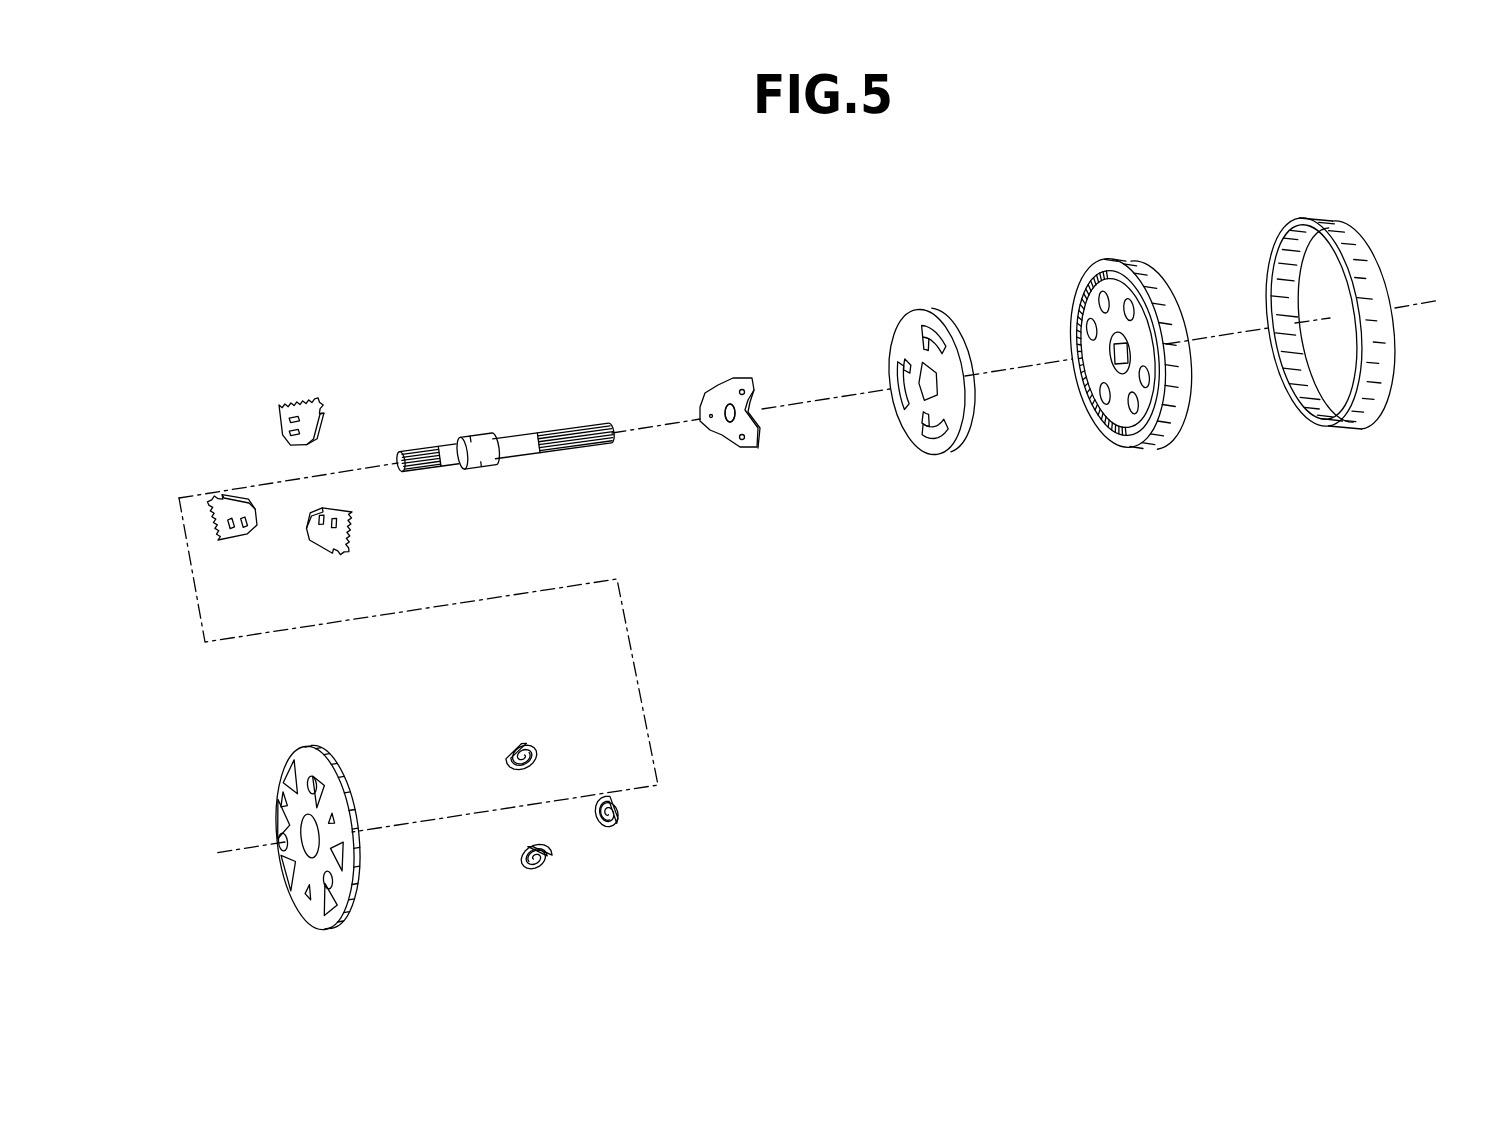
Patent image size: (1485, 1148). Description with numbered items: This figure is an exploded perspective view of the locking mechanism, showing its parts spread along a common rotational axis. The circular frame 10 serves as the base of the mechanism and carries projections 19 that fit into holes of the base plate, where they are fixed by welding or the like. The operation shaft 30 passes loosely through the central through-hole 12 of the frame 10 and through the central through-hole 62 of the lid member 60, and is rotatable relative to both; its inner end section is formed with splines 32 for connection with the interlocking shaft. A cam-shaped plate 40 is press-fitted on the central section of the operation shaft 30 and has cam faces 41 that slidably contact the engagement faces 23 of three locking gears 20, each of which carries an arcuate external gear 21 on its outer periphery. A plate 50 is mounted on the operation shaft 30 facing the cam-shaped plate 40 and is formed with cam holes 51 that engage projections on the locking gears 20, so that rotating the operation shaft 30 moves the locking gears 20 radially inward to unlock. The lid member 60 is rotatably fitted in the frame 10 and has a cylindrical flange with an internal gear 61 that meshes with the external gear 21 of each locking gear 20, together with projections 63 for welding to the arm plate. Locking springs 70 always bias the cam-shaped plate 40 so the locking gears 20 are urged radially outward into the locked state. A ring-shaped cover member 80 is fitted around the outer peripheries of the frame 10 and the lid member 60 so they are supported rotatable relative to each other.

The circular frame 10 is at (300, 815).
The central through-hole 12 is at (302, 832).
The projections 19 is at (314, 782).
The locking gears 20 is at (274, 406).
The arcuate external gear 21 is at (296, 400).
The engagement faces 23 is at (290, 441).
The operation shaft 30 is at (499, 424).
The splines 32 is at (565, 418).
The cam-shaped plate 40 is at (717, 376).
The cam faces 41 is at (742, 377).
The plate 50 is at (928, 352).
The cam holes 51 is at (940, 330).
The lid member 60 is at (1133, 326).
The internal gear 61 is at (1093, 415).
The central through-hole 62 is at (1126, 345).
The projections 63 is at (1120, 260).
The locking springs 70 is at (541, 772).
The ring-shaped cover member 80 is at (1359, 224).